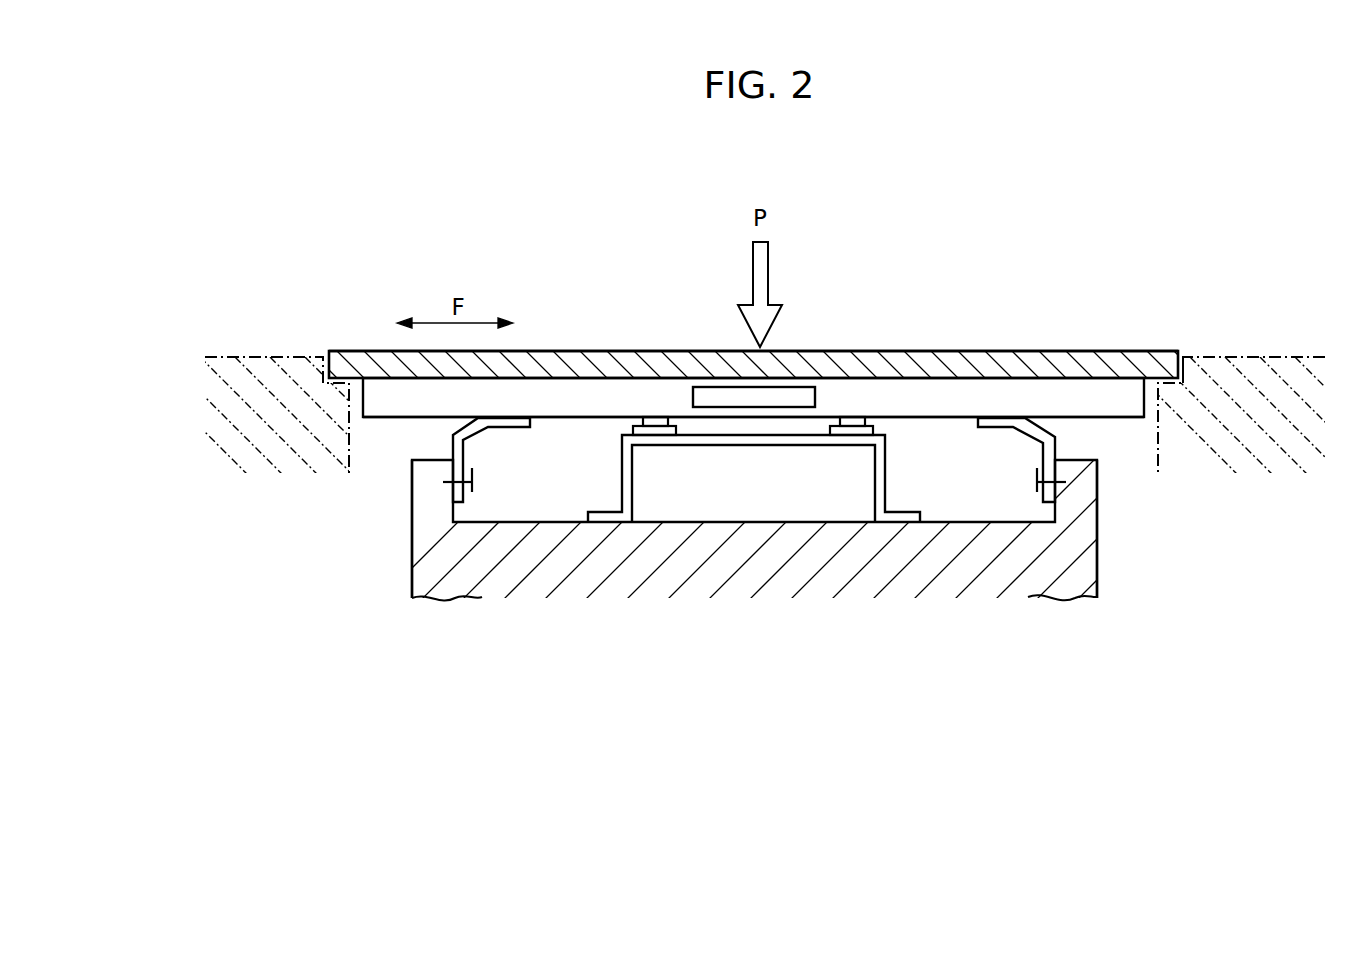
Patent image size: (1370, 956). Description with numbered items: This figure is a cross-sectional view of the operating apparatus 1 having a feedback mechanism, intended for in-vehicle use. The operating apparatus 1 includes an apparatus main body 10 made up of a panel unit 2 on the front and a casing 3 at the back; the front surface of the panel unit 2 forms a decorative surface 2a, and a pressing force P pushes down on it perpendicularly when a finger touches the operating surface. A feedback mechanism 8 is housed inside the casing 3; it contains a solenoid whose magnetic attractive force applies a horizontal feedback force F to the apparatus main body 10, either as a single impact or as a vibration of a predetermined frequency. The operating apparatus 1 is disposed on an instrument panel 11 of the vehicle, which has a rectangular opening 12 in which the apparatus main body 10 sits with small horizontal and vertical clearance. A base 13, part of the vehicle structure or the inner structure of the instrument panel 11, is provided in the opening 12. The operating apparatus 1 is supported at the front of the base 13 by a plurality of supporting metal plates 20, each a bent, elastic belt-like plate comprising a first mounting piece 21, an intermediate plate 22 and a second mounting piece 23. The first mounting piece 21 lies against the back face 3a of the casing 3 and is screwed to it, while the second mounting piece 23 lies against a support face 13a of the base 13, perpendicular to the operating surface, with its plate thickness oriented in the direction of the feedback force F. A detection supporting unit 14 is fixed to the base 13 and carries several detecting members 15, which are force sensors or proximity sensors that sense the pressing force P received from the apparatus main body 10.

The operating apparatus 1 is at (1040, 332).
The panel unit 2 is at (912, 357).
The decorative surface 2a is at (645, 351).
The casing 3 is at (953, 397).
The back face 3a is at (608, 417).
The feedback mechanism 8 is at (805, 398).
The apparatus main body 10 is at (757, 364).
The instrument panel 11 is at (1247, 357).
The opening 12 is at (1182, 357).
The base 13 is at (1063, 580).
The support face 13a is at (463, 512).
The detection supporting unit 14 is at (873, 492).
The detecting members 15 is at (663, 430).
The supporting metal plate 20 is at (762, 531).
The first mounting piece 21 is at (518, 422).
The intermediate plate 22 is at (457, 426).
The second mounting piece 23 is at (445, 483).